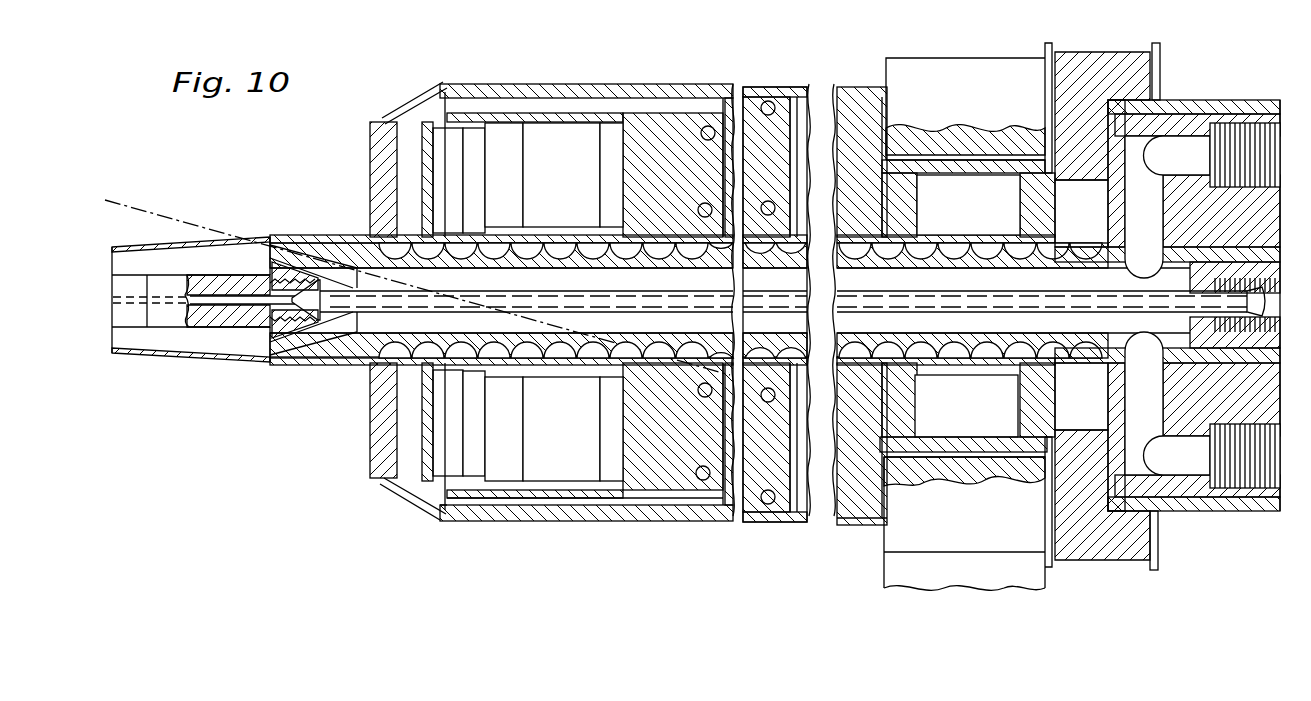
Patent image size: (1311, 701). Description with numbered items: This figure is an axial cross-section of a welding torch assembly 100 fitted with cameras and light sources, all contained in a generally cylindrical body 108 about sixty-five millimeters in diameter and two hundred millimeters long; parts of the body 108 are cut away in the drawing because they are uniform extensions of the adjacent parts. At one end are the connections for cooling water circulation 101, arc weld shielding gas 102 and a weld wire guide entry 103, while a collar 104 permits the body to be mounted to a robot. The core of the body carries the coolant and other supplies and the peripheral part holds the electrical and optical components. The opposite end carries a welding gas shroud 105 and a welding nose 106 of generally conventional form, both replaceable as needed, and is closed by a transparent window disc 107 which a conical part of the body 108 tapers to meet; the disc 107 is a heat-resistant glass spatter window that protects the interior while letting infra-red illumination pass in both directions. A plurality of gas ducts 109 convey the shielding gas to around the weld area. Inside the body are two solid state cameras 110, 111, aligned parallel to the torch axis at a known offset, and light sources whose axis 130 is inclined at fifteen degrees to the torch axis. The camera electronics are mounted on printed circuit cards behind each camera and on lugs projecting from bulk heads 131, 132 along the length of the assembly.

The assembly 100 is at (463, 550).
The cooling water circulation connection 101 is at (1233, 468).
The arc weld shielding gas connection 102 is at (1232, 140).
The weld wire guide entry 103 is at (1257, 318).
The collar 104 is at (995, 566).
The welding gas shroud 105 is at (208, 361).
The welding nose 106 is at (137, 312).
The transparent window disc 107 is at (375, 438).
The cylindrical body 108 is at (738, 132).
The gas ducts 109 is at (305, 334).
The solid state camera 110 is at (552, 456).
The solid state camera 111 is at (553, 140).
The axis 130 is at (192, 227).
The bulk head 131 is at (650, 140).
The bulk head 132 is at (790, 127).